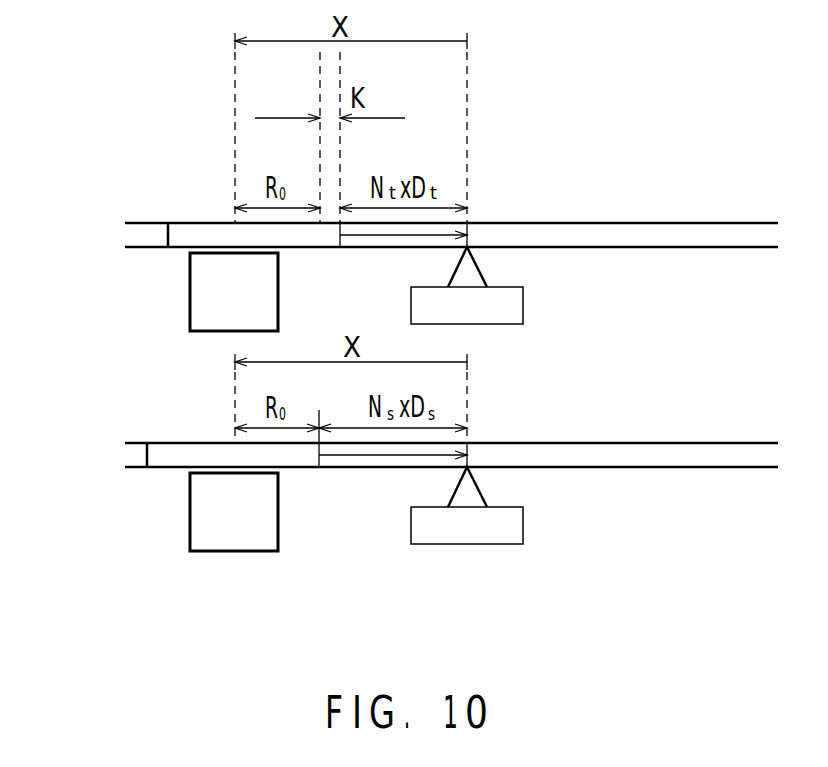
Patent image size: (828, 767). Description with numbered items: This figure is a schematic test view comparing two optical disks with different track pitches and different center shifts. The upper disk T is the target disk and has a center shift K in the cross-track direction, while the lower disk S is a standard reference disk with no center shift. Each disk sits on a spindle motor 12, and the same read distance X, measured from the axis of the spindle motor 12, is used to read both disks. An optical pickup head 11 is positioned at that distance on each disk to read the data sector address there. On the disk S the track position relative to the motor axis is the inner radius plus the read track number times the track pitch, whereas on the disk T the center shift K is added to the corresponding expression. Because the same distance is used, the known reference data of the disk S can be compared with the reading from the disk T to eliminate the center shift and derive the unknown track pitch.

The optical pickup head 11 is at (523, 305).
The spindle motor 12 is at (278, 274).
The disk T is at (403, 239).
The disk S is at (403, 443).